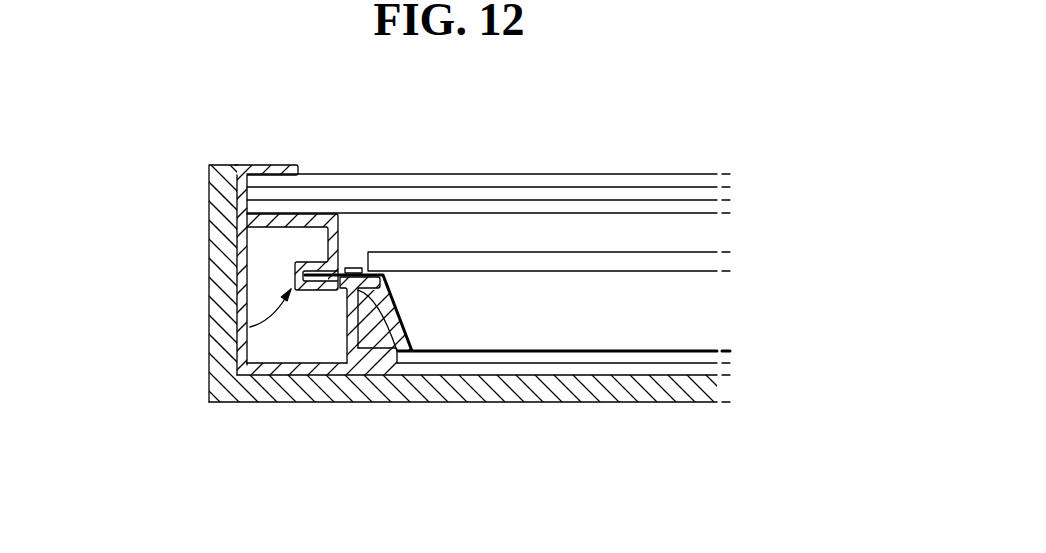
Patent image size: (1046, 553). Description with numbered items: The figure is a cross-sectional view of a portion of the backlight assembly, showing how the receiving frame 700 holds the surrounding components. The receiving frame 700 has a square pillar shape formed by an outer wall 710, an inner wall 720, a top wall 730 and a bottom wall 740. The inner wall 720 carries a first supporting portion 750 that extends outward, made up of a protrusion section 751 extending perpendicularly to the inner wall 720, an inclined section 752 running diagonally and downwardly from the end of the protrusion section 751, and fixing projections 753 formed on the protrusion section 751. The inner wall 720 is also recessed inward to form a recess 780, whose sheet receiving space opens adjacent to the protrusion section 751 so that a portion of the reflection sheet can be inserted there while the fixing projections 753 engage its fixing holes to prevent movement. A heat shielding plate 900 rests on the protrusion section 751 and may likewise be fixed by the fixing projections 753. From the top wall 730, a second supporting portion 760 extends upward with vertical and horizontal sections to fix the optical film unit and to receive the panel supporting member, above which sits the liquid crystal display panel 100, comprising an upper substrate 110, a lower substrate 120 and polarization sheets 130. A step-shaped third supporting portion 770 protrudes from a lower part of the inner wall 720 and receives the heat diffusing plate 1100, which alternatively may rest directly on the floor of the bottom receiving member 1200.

The liquid crystal display panel 100 is at (488, 148).
The upper substrate 110 is at (375, 197).
The lower substrate 120 is at (427, 208).
The polarization sheet 130 is at (478, 181).
The receiving frame 700 is at (489, 341).
The outer wall 710 is at (240, 289).
The inner wall 720 is at (347, 312).
The top wall 730 is at (292, 229).
The bottom wall 740 is at (290, 369).
The first supporting portion 750 is at (375, 318).
The protrusion section 751 is at (363, 292).
The inclined section 752 is at (327, 438).
The fixing projections 753 is at (340, 366).
The second supporting portion 760 is at (222, 197).
The third supporting portion 770 is at (374, 290).
The recess 780 is at (203, 313).
The heat shielding plate 900 is at (708, 265).
The heat diffusing plate 1100 is at (678, 362).
The bottom receiving member 1200 is at (585, 387).